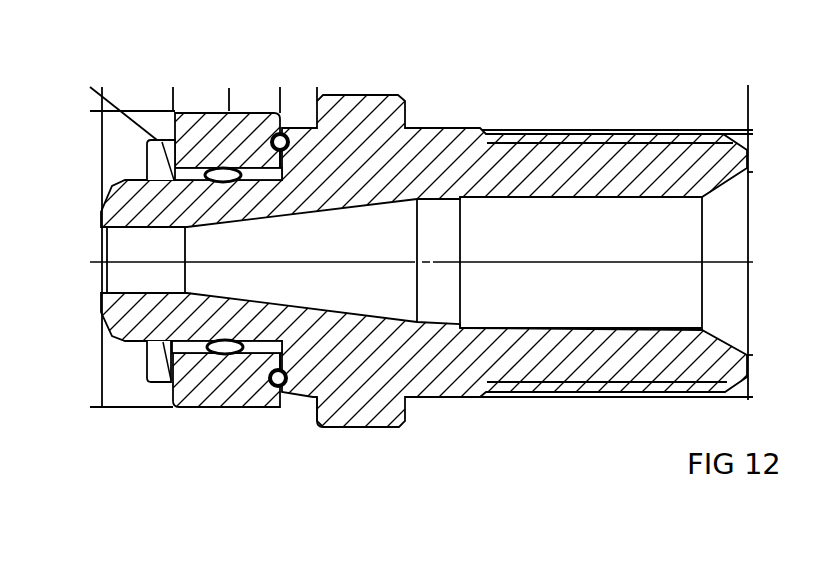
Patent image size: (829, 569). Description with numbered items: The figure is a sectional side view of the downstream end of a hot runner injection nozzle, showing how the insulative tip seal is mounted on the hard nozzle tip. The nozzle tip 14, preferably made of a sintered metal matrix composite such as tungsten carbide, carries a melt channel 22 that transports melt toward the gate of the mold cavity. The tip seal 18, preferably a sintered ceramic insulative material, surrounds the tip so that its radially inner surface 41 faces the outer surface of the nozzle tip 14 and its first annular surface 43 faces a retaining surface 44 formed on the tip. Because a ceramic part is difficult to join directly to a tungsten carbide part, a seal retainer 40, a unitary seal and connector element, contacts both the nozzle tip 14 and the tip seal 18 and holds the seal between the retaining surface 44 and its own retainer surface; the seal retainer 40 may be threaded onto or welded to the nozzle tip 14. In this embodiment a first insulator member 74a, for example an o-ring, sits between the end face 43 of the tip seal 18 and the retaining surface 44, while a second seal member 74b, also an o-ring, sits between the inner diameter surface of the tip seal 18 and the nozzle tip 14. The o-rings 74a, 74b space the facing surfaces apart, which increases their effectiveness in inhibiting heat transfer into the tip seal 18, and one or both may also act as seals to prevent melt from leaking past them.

The nozzle tip 14 is at (432, 378).
The tip seal 18 is at (234, 397).
The melt channel 22 is at (643, 297).
The seal retainer 40 is at (145, 360).
The radially inner surface 41 is at (276, 358).
The first annular surface 43 is at (348, 424).
The retaining surface 44 is at (270, 371).
The first insulator member 74a is at (277, 387).
The second seal member 74b is at (228, 340).